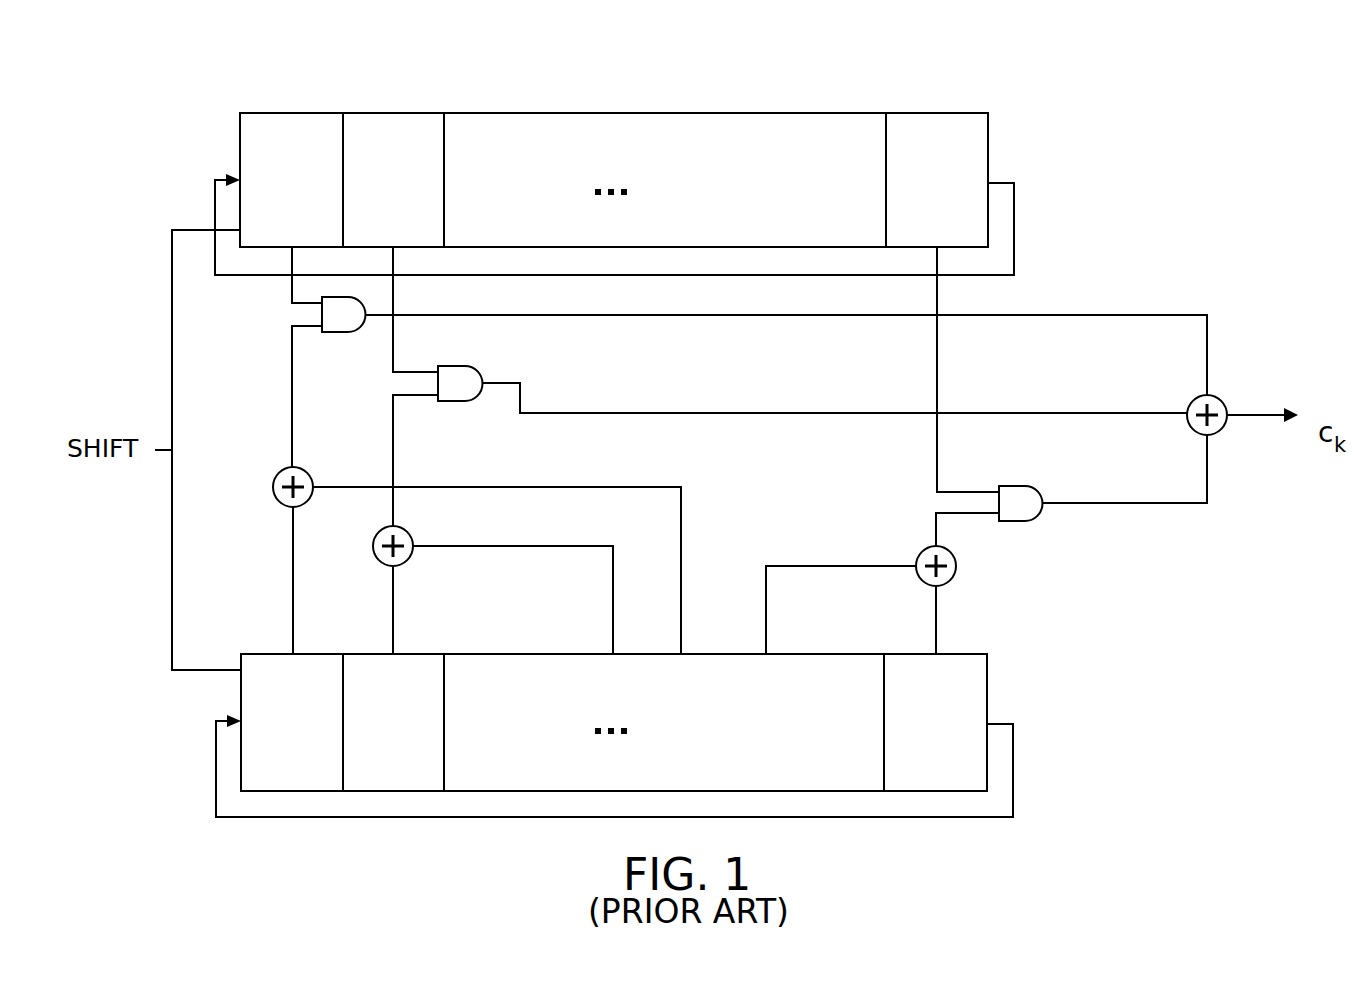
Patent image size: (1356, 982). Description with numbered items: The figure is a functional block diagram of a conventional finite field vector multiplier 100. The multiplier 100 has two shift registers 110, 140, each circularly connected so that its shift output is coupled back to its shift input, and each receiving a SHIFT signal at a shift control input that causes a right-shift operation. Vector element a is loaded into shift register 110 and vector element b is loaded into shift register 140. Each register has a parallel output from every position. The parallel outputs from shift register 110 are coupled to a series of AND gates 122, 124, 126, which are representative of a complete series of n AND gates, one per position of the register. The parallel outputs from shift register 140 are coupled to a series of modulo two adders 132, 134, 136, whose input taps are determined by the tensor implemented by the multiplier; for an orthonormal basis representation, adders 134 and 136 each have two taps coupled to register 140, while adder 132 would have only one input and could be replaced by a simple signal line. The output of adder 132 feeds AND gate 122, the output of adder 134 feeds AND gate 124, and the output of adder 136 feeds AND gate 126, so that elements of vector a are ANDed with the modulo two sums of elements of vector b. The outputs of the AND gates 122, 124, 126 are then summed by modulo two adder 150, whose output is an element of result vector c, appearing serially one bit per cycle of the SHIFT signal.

The multiplier 100 is at (1176, 126).
The shift register 110 is at (240, 200).
The AND gate 122 is at (347, 333).
The AND gate 124 is at (460, 402).
The AND gate 126 is at (1020, 485).
The modulo 2 adder 132 is at (272, 482).
The modulo 2 adder 134 is at (372, 546).
The modulo 2 adder 136 is at (957, 568).
The shift register 140 is at (240, 685).
The modulo 2 adder 150 is at (1225, 398).